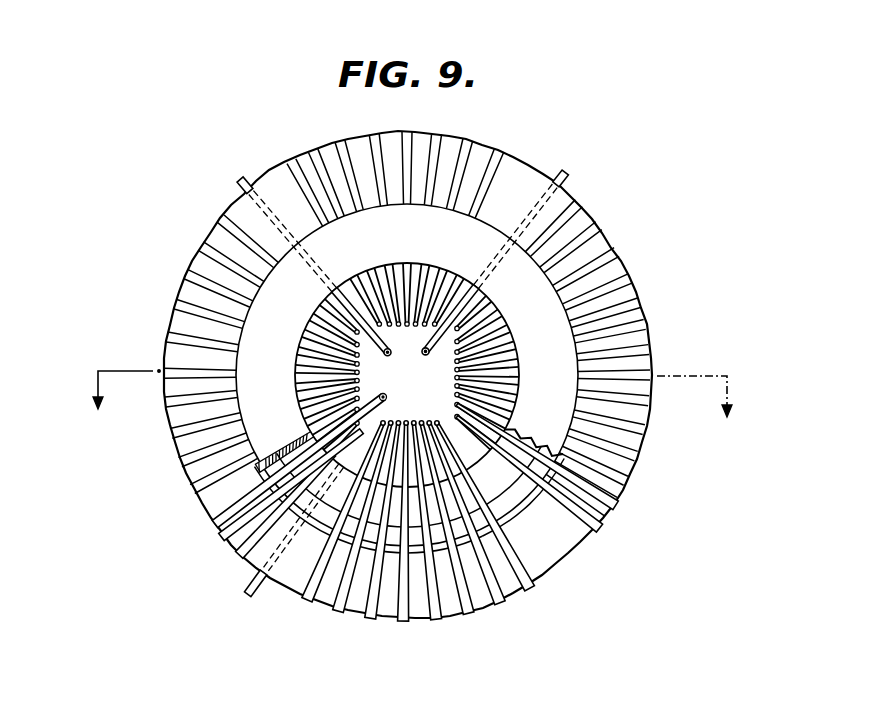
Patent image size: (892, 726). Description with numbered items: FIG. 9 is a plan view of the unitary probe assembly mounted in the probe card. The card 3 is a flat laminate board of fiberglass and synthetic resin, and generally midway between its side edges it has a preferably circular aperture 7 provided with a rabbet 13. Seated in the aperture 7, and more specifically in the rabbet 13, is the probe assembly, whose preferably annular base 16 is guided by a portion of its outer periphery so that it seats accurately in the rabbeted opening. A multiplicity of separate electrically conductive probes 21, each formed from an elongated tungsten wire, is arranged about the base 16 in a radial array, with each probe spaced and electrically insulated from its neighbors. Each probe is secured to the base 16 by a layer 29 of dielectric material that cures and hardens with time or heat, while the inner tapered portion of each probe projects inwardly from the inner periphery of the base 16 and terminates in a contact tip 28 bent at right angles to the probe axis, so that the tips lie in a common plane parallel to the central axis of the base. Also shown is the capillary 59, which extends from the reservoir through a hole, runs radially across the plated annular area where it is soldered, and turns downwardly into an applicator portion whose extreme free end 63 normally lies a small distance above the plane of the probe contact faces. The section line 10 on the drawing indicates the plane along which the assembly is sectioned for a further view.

The card 3 is at (545, 558).
The aperture 7 is at (331, 498).
The section line 10 is at (414, 382).
The rabbet 13 is at (295, 497).
The base 16 is at (525, 493).
The electrically conductive probes 21 is at (636, 283).
The contact tip 28 is at (360, 353).
The layer of dielectric material 29 is at (556, 397).
The capillary 59 is at (250, 177).
The extreme free end 63 is at (388, 397).